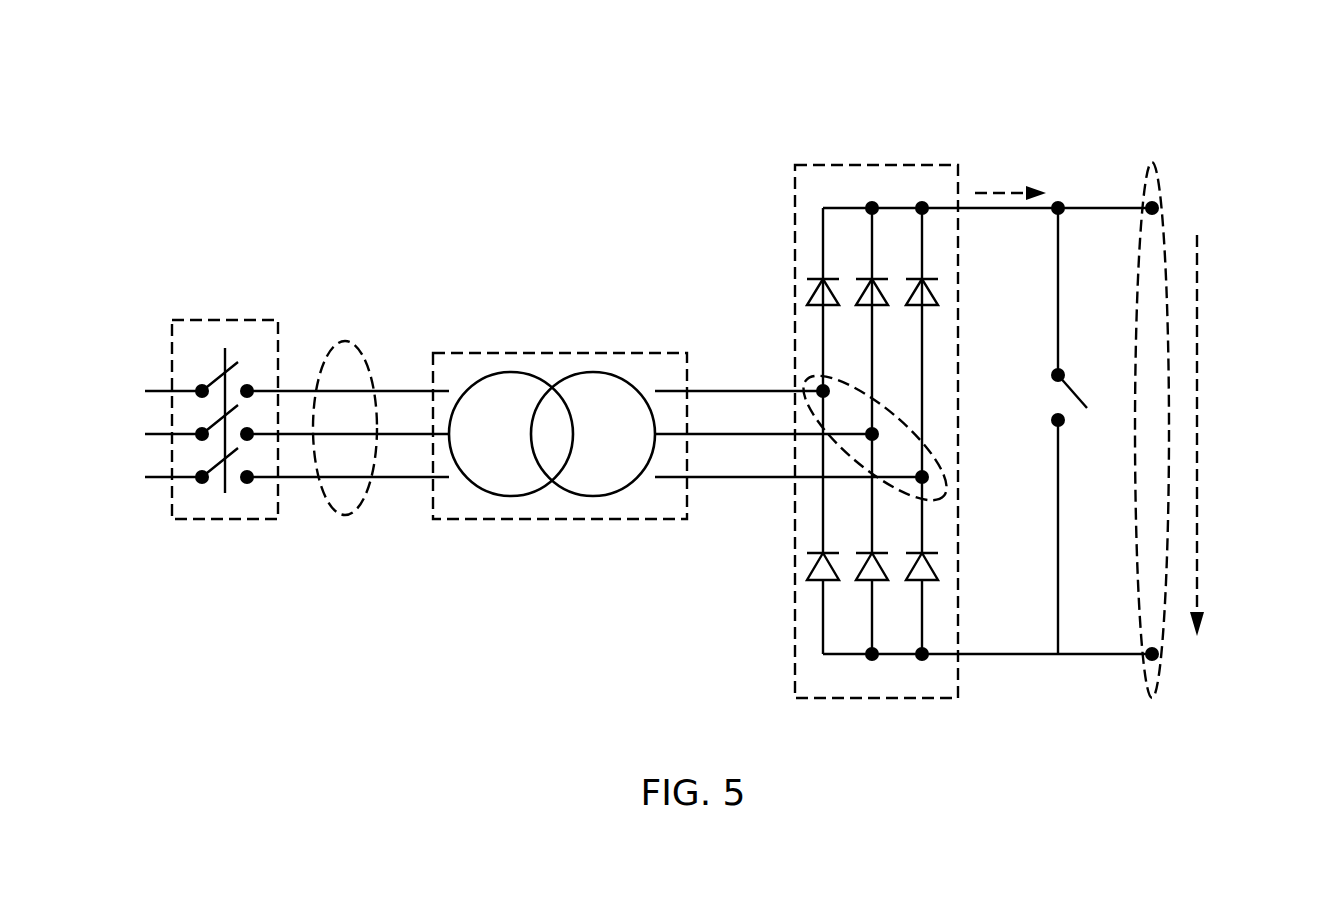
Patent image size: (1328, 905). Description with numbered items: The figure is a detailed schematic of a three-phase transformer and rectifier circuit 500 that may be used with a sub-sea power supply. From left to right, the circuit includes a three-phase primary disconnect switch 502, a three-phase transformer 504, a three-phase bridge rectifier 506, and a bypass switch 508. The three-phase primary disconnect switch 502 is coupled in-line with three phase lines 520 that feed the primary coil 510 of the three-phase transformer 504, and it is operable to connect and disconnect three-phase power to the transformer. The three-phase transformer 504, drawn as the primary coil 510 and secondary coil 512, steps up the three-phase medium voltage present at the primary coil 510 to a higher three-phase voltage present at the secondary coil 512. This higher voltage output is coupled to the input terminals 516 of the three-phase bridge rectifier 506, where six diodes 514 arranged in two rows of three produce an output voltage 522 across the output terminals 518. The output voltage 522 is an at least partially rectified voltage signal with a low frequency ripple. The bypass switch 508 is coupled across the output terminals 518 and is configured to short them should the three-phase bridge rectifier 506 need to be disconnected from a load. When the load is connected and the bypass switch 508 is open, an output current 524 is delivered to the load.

The three-phase transformer and rectifier circuit 500 is at (318, 101).
The three-phase primary disconnect switch 502 is at (222, 522).
The three-phase transformer 504 is at (549, 522).
The three-phase bridge rectifier 506 is at (868, 164).
The bypass switch 508 is at (1068, 392).
The primary coil 510 is at (509, 372).
The secondary coil 512 is at (592, 372).
The diodes 514 is at (812, 289).
The input terminals 516 is at (950, 452).
The output terminals 518 is at (1163, 184).
The three phase lines 520 is at (336, 517).
The output voltage 522 is at (1200, 425).
The output current 524 is at (998, 189).